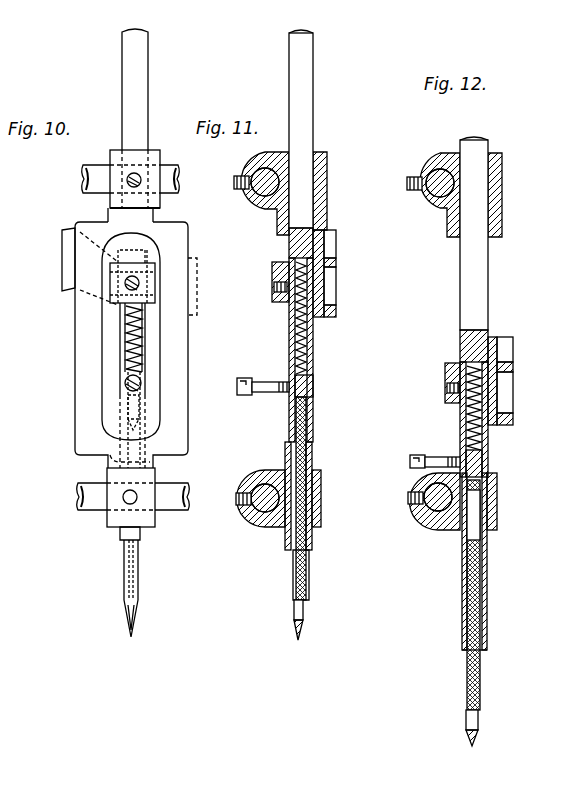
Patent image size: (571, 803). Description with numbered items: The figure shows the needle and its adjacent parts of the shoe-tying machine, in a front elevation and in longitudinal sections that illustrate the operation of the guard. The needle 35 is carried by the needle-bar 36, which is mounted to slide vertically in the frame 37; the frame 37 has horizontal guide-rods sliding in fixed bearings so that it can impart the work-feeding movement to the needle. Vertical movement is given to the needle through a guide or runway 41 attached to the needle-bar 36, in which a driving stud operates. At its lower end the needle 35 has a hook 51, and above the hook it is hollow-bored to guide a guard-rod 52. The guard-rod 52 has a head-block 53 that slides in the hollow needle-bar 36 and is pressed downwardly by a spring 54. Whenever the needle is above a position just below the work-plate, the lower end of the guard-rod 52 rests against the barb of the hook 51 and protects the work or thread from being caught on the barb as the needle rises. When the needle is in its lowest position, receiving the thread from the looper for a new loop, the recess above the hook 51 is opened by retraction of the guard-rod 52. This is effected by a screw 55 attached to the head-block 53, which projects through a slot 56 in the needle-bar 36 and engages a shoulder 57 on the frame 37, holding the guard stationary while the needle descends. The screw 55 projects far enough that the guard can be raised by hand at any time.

In FIG. 11, the needle 35 is at (294, 596).
In FIG. 12, the needle 35 is at (465, 688).
In FIG. 10, the needle-bar 36 is at (124, 78).
In FIG. 11, the needle-bar 36 is at (306, 121).
In FIG. 12, the needle-bar 36 is at (490, 291).
In FIG. 10, the frame 37 is at (78, 332).
In FIG. 10, the guide or runway 41 is at (66, 272).
In FIG. 11, the guide or runway 41 is at (332, 252).
In FIG. 12, the guide or runway 41 is at (506, 348).
In FIG. 10, the hook 51 is at (140, 618).
In FIG. 10, the guard-rod 52 is at (135, 608).
In FIG. 11, the guard-rod 52 is at (308, 578).
In FIG. 12, the guard-rod 52 is at (484, 546).
In FIG. 10, the head-block 53 is at (146, 338).
In FIG. 11, the head-block 53 is at (318, 378).
In FIG. 12, the head-block 53 is at (489, 458).
In FIG. 10, the spring 54 is at (150, 352).
In FIG. 11, the spring 54 is at (296, 331).
In FIG. 12, the spring 54 is at (460, 364).
In FIG. 10, the screw 55 is at (124, 383).
In FIG. 11, the screw 55 is at (264, 397).
In FIG. 12, the screw 55 is at (413, 455).
In FIG. 10, the slot 56 is at (150, 362).
In FIG. 11, the slot 56 is at (292, 356).
In FIG. 12, the slot 56 is at (474, 408).
In FIG. 10, the shoulder 57 is at (160, 462).
In FIG. 11, the shoulder 57 is at (275, 468).
In FIG. 12, the shoulder 57 is at (434, 472).